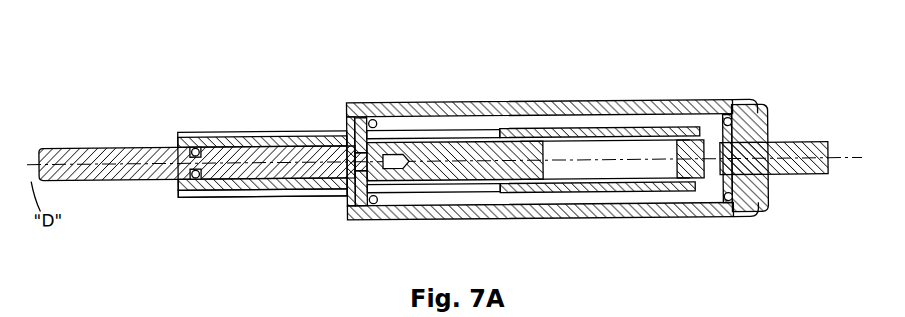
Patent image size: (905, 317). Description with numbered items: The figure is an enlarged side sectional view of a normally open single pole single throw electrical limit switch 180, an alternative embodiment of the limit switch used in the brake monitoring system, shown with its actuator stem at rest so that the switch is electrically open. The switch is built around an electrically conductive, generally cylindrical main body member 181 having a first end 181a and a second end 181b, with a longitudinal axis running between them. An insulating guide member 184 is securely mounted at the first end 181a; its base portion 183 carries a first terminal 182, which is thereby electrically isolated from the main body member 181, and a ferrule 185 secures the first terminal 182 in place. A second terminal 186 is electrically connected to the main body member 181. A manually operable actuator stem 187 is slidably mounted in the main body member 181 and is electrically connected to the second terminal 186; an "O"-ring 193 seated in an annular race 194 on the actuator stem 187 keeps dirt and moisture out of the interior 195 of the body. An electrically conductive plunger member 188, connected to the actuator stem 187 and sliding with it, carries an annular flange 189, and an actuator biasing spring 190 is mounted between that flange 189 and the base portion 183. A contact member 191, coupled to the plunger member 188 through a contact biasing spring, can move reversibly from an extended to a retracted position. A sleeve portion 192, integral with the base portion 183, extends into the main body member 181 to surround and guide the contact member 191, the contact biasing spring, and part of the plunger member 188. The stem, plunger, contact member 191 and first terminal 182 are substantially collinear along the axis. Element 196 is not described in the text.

The normally open single pole single throw electrical limit switch 180 is at (624, 62).
The main body member 181 is at (362, 102).
The first end 181a is at (752, 104).
The second end 181b is at (340, 110).
The first terminal 182 is at (832, 152).
The base portion 183 is at (770, 132).
The insulating guide member 184 is at (770, 110).
The ferrule 185 is at (735, 182).
The second terminal 186 is at (203, 130).
The manually operable actuator stem 187 is at (69, 147).
The electrically conductive plunger member 188 is at (442, 133).
The annular flange 189 is at (378, 195).
The actuator biasing spring 190 is at (590, 195).
The contact member 191 is at (689, 108).
The sleeve portion 192 is at (570, 128).
The "O"-ring 193 is at (186, 192).
The annular race 194 is at (217, 190).
The interior 195 is at (455, 185).
The lower liner band 196 is at (652, 193).